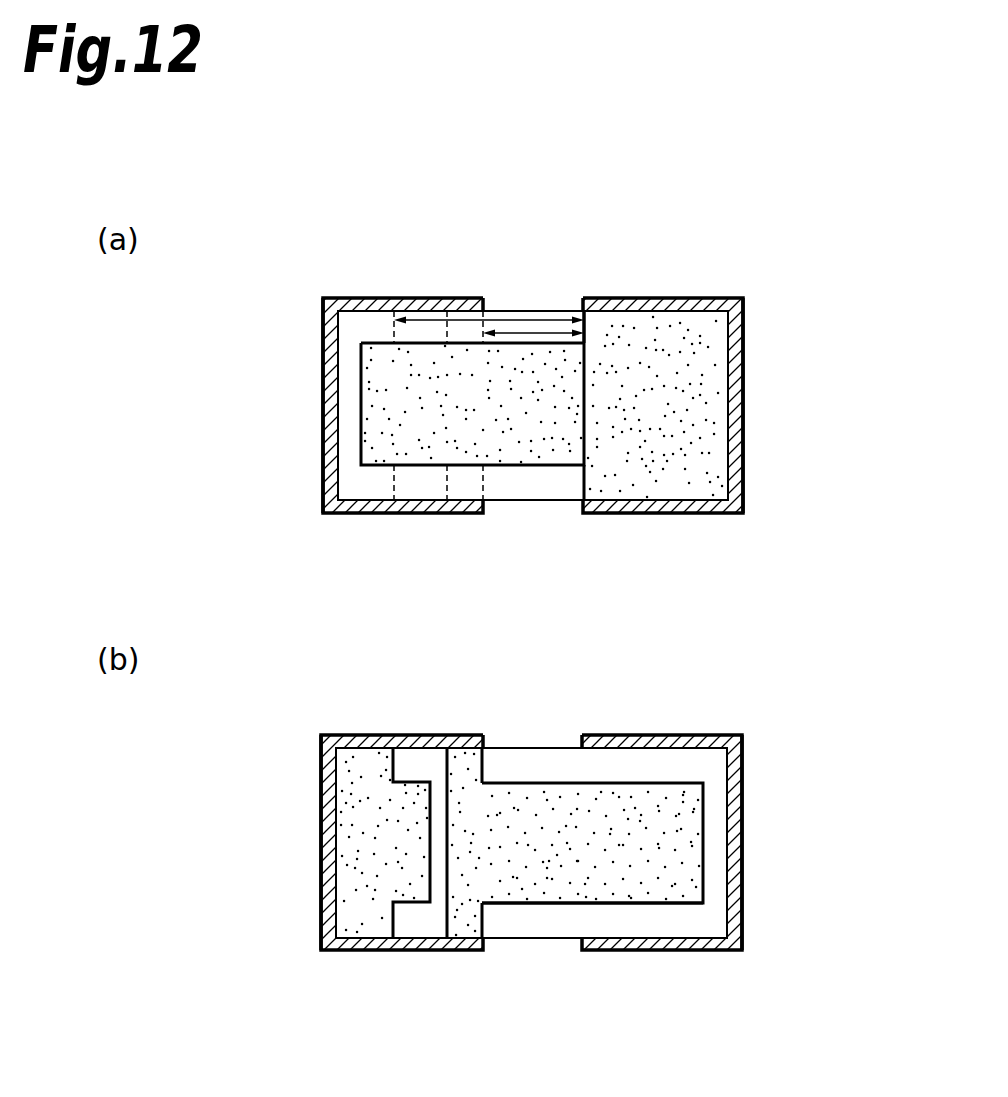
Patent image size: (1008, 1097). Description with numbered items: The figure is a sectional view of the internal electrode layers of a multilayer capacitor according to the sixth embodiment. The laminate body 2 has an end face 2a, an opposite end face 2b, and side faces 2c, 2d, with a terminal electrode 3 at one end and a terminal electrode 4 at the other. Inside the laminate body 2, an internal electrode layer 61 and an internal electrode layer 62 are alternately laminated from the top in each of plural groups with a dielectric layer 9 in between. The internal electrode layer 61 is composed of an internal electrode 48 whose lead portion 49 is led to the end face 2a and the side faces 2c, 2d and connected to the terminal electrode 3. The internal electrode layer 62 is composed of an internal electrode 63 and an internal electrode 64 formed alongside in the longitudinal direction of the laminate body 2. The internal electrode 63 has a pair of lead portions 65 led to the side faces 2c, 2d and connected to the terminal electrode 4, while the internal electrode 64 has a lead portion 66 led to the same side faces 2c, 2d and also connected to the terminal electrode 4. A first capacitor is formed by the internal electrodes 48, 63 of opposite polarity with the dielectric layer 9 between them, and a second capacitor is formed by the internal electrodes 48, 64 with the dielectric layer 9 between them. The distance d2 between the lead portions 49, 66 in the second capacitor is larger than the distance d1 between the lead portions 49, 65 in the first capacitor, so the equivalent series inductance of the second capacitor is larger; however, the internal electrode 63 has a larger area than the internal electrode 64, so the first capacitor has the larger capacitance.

The laminate body 2 is at (569, 290).
The end face 2a is at (744, 448).
The end face 2b is at (323, 453).
The side face 2c is at (535, 307).
The side face 2d is at (532, 501).
The terminal electrode 3 is at (744, 350).
The terminal electrode 4 is at (323, 362).
The dielectric layer 9 is at (372, 331).
The internal electrode 48 is at (447, 412).
The lead portion 49 is at (719, 417).
The internal electrode layer 61 is at (691, 332).
The internal electrode layer 62 is at (666, 917).
The internal electrode 63 is at (652, 822).
The internal electrode 64 is at (398, 821).
The lead portions 65 is at (457, 763).
The lead portion 66 is at (348, 845).
The distance d1 is at (506, 344).
The distance d2 is at (510, 313).